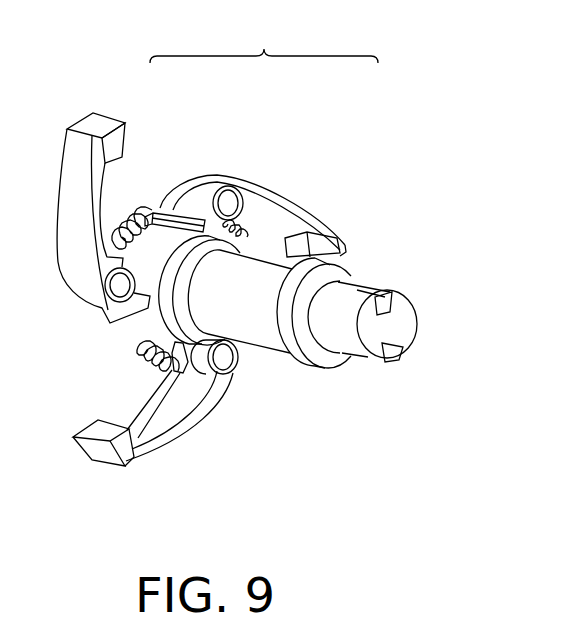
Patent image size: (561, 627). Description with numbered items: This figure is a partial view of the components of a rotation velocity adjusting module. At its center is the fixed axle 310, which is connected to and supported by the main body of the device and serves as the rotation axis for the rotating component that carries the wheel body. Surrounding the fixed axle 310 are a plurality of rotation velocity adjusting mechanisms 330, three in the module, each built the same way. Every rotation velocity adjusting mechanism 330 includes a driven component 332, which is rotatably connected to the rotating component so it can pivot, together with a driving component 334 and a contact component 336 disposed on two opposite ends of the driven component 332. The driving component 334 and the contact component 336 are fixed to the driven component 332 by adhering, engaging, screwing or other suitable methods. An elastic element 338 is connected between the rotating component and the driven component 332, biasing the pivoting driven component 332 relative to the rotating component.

The fixed axle 310 is at (399, 323).
The rotation velocity adjusting mechanism 330 is at (249, 474).
The driven component 332 is at (85, 183).
The driving component 334 is at (115, 143).
The contact component 336 is at (200, 215).
The elastic element 338 is at (142, 212).